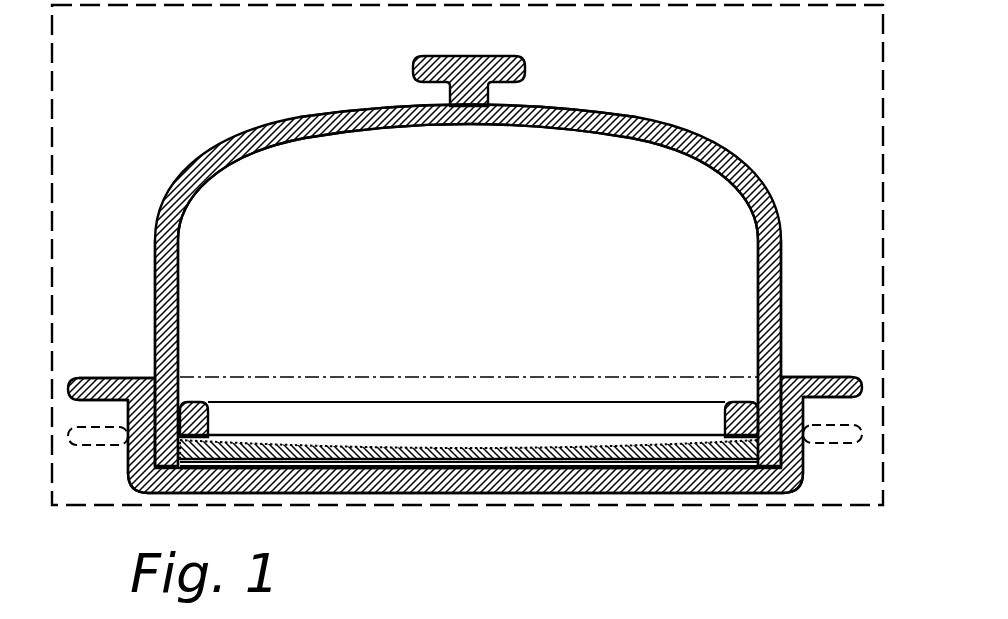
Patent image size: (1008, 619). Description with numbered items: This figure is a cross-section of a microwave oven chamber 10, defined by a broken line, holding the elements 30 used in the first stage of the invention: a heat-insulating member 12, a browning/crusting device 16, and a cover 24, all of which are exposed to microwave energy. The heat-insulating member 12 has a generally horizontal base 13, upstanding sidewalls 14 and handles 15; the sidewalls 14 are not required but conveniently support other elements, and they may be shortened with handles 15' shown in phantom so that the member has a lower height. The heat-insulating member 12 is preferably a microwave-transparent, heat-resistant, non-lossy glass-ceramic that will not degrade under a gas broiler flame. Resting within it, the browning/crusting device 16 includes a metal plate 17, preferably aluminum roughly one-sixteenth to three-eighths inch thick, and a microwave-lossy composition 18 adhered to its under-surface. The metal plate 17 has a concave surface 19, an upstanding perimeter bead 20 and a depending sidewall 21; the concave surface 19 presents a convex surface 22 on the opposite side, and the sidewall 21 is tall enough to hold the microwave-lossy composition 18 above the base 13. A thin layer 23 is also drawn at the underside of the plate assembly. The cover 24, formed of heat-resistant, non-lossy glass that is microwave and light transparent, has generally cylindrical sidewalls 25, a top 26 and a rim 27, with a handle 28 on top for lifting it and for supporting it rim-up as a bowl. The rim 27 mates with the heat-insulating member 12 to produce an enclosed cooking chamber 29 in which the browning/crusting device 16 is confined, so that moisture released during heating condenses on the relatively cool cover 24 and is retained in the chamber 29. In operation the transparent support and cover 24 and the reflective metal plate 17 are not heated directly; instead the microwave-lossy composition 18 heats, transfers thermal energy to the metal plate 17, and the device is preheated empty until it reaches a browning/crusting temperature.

The microwave oven chamber 10 is at (146, 71).
The heat-insulating member 12 is at (463, 436).
The base 13 is at (372, 461).
The sidewalls 14 is at (127, 413).
The handles 15 is at (461, 347).
The handles 15' is at (467, 461).
The browning/crusting device 16 is at (522, 438).
The metal plate 17 is at (628, 462).
The microwave-lossy composition 18 is at (628, 495).
The concave surface 19 is at (456, 450).
The perimeter bead 20 is at (204, 402).
The sidewall 21 is at (130, 458).
The convex surface 22 is at (466, 494).
The backing sheet 23 is at (325, 467).
The cover 24 is at (666, 129).
The sidewalls 25 is at (150, 308).
The top 26 is at (610, 122).
The rim 27 is at (165, 497).
The handles 28 is at (412, 80).
The cooking chamber 29 is at (487, 231).
The elements 30 is at (455, 255).